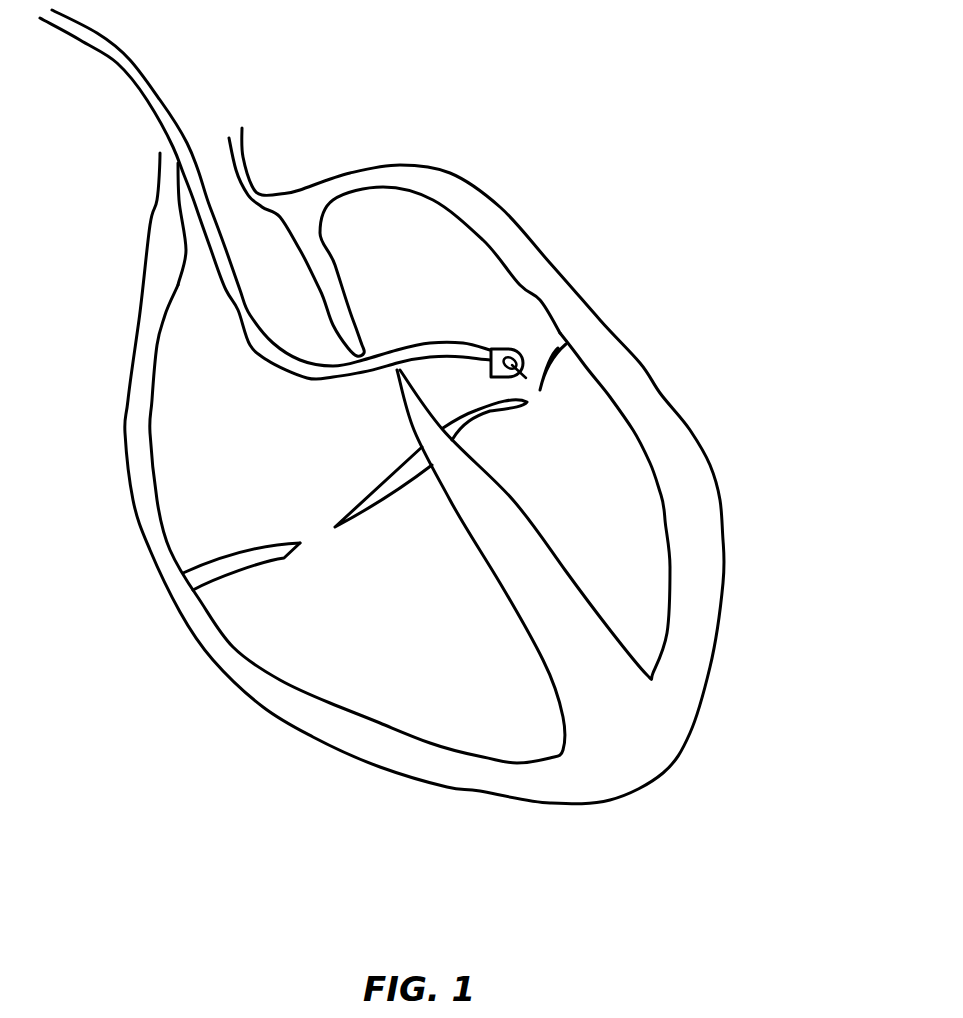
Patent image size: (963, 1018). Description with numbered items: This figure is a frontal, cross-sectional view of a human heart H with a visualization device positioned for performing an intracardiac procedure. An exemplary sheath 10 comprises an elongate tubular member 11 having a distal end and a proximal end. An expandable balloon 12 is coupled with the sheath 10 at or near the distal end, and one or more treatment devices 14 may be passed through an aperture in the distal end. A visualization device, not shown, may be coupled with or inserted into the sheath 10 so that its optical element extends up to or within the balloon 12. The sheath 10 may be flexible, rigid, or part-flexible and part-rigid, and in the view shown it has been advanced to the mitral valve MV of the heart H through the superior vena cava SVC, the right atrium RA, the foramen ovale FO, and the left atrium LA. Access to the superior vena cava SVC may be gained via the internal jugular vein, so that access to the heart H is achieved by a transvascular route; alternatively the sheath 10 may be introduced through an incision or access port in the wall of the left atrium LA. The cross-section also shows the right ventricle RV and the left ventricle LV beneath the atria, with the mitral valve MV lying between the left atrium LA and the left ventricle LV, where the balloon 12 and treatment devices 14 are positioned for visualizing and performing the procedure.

The sheath 10 is at (236, 82).
The elongate tubular member 11 is at (213, 247).
The expandable balloon 12 is at (519, 333).
The treatment device 14 is at (515, 381).
The heart H is at (730, 308).
The superior vena cava SVC is at (183, 218).
The foramen ovale FO is at (372, 386).
The mitral valve MV is at (560, 407).
The right atrium RA is at (243, 397).
The left atrium LA is at (437, 295).
The right ventricle RV is at (408, 645).
The left ventricle LV is at (622, 528).